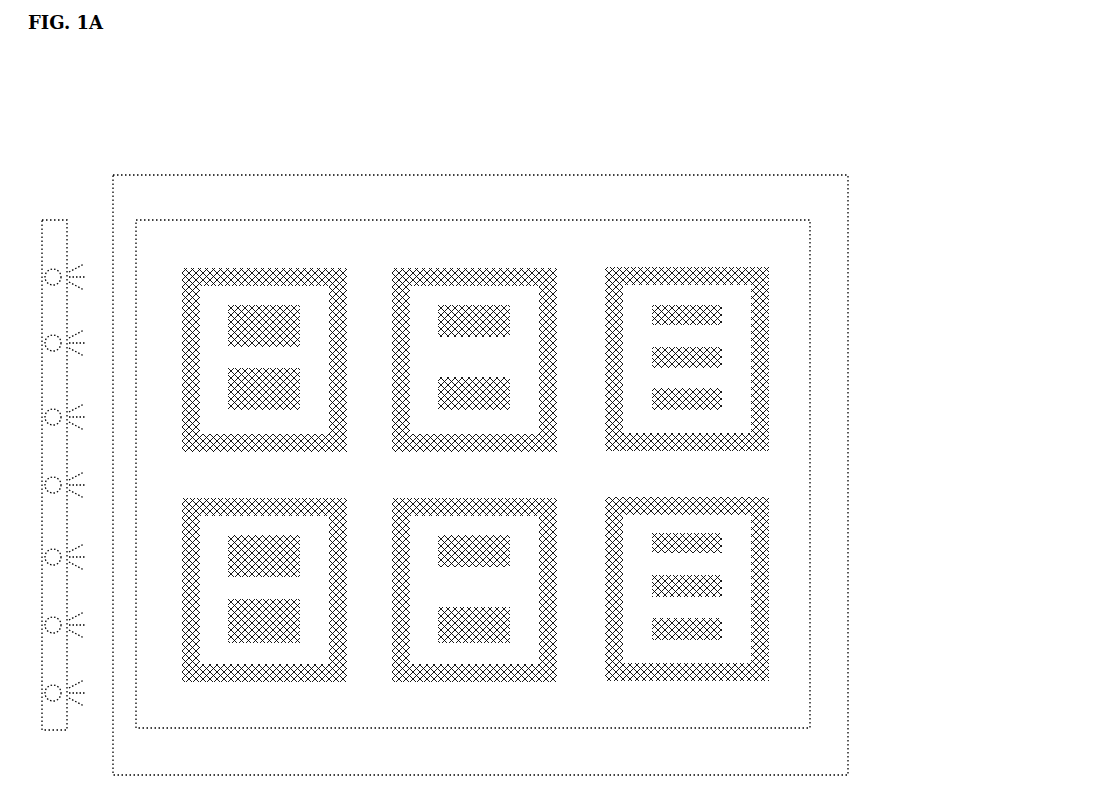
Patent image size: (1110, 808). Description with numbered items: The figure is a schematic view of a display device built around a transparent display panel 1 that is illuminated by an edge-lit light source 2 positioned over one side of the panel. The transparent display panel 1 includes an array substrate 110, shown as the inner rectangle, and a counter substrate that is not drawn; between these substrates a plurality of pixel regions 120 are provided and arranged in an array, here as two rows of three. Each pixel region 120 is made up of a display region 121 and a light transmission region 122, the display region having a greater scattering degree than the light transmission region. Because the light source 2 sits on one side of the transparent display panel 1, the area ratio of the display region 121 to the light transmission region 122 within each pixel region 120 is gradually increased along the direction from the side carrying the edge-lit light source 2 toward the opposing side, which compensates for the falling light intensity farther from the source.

The transparent display panel 1 is at (794, 174).
The light source 2 is at (58, 220).
The array substrate 110 is at (720, 218).
The pixel region 120 is at (773, 385).
The display region 121 is at (313, 312).
The light transmission region 122 is at (193, 268).